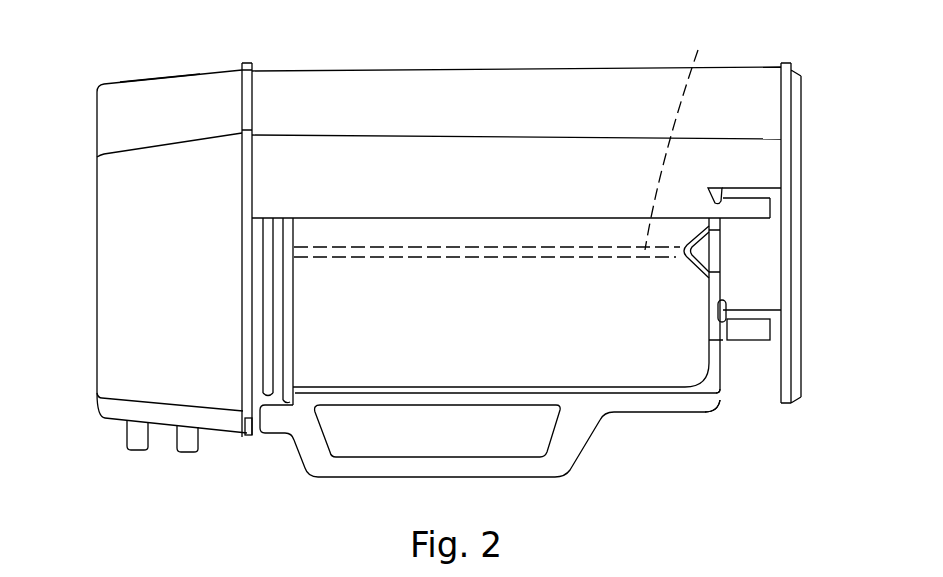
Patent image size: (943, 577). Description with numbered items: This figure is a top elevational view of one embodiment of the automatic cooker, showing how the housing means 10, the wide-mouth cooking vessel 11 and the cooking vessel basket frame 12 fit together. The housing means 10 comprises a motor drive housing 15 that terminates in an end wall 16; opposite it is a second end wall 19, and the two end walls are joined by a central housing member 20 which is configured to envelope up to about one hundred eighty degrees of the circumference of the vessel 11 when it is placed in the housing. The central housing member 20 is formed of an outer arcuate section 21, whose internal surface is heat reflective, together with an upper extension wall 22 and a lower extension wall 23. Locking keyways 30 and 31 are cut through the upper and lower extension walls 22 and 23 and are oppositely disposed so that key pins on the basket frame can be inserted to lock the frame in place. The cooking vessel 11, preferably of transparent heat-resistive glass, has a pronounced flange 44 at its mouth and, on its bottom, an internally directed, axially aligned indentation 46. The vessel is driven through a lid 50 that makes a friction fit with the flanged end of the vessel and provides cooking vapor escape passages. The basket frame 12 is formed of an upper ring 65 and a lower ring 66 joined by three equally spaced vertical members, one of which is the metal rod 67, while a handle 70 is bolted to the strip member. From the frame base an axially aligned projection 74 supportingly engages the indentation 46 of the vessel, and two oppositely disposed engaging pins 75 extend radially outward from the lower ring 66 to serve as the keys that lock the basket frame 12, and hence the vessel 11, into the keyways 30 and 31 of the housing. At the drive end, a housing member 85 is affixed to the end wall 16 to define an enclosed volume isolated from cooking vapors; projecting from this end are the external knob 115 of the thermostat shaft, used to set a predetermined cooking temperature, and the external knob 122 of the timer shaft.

The housing means 10 is at (573, 68).
The cooking vessel 11 is at (666, 392).
The basket frame 12 is at (724, 405).
The motor drive housing 15 is at (186, 77).
The end wall 16 is at (245, 62).
The end wall 19 is at (795, 112).
The central housing member 20 is at (637, 87).
The outer arcuate section 21 is at (387, 82).
The upper extension wall 22 is at (323, 150).
The lower extension wall 23 is at (748, 332).
The locking keyway 30 is at (750, 193).
The locking keyway 31 is at (755, 312).
The flange 44 is at (273, 398).
The indentation 46 is at (700, 270).
The lid 50 is at (260, 393).
The upper ring 65 is at (290, 406).
The lower ring 66 is at (725, 390).
The metal rod 67 is at (678, 137).
The handle 70 is at (575, 437).
The projection 74 is at (700, 250).
The engaging pin 75 is at (722, 190).
The housing member 85 is at (132, 95).
The external knob 115 is at (132, 436).
The external knob 122 is at (188, 442).